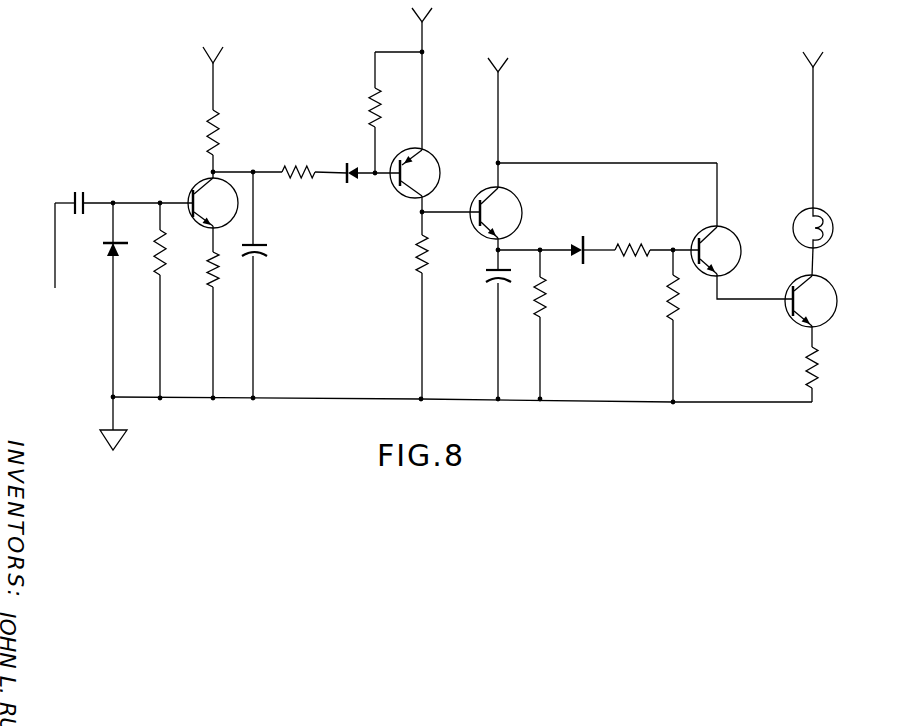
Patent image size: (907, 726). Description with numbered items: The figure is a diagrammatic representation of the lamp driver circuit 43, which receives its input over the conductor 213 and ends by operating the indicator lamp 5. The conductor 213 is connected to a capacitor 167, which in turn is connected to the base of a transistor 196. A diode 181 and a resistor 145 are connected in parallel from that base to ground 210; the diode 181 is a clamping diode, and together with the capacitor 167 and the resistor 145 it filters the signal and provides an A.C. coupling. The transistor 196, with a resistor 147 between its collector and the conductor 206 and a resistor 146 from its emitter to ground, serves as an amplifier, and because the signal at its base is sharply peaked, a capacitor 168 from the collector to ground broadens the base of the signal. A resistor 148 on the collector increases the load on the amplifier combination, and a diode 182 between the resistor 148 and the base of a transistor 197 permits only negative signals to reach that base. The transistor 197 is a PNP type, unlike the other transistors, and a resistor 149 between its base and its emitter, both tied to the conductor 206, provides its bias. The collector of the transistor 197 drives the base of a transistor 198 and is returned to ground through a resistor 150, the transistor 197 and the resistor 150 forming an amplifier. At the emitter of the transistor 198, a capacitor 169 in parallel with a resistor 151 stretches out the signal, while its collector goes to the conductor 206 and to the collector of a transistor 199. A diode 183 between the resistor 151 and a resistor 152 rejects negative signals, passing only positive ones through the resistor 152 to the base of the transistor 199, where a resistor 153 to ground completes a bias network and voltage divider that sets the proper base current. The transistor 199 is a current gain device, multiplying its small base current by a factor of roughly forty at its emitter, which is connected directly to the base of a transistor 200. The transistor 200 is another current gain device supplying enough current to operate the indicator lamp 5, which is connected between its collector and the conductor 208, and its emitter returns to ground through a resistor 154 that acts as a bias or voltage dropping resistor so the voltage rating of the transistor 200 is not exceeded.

The conductor 206 is at (216, 70).
The conductor 208 is at (817, 73).
The resistor 147 is at (206, 136).
The transistor 196 is at (193, 185).
The capacitor 167 is at (80, 188).
The conductor 213 is at (55, 247).
The diode 181 is at (103, 250).
The resistor 145 is at (157, 258).
The resistor 146 is at (210, 263).
The capacitor 168 is at (270, 252).
The ground 210 is at (123, 437).
The resistor 149 is at (378, 113).
The resistor 148 is at (318, 145).
The diode 182 is at (350, 187).
The transistor 197 is at (404, 198).
The resistor 150 is at (418, 260).
The transistor 198 is at (478, 233).
The capacitor 169 is at (482, 277).
The diode 183 is at (580, 240).
The resistor 151 is at (545, 314).
The resistor 152 is at (633, 255).
The resistor 153 is at (668, 307).
The transistor 199 is at (697, 233).
The transistor 200 is at (788, 318).
The resistor 154 is at (813, 367).
The indicator lamp 5 is at (837, 230).
The lamp driver circuit 43 is at (609, 107).